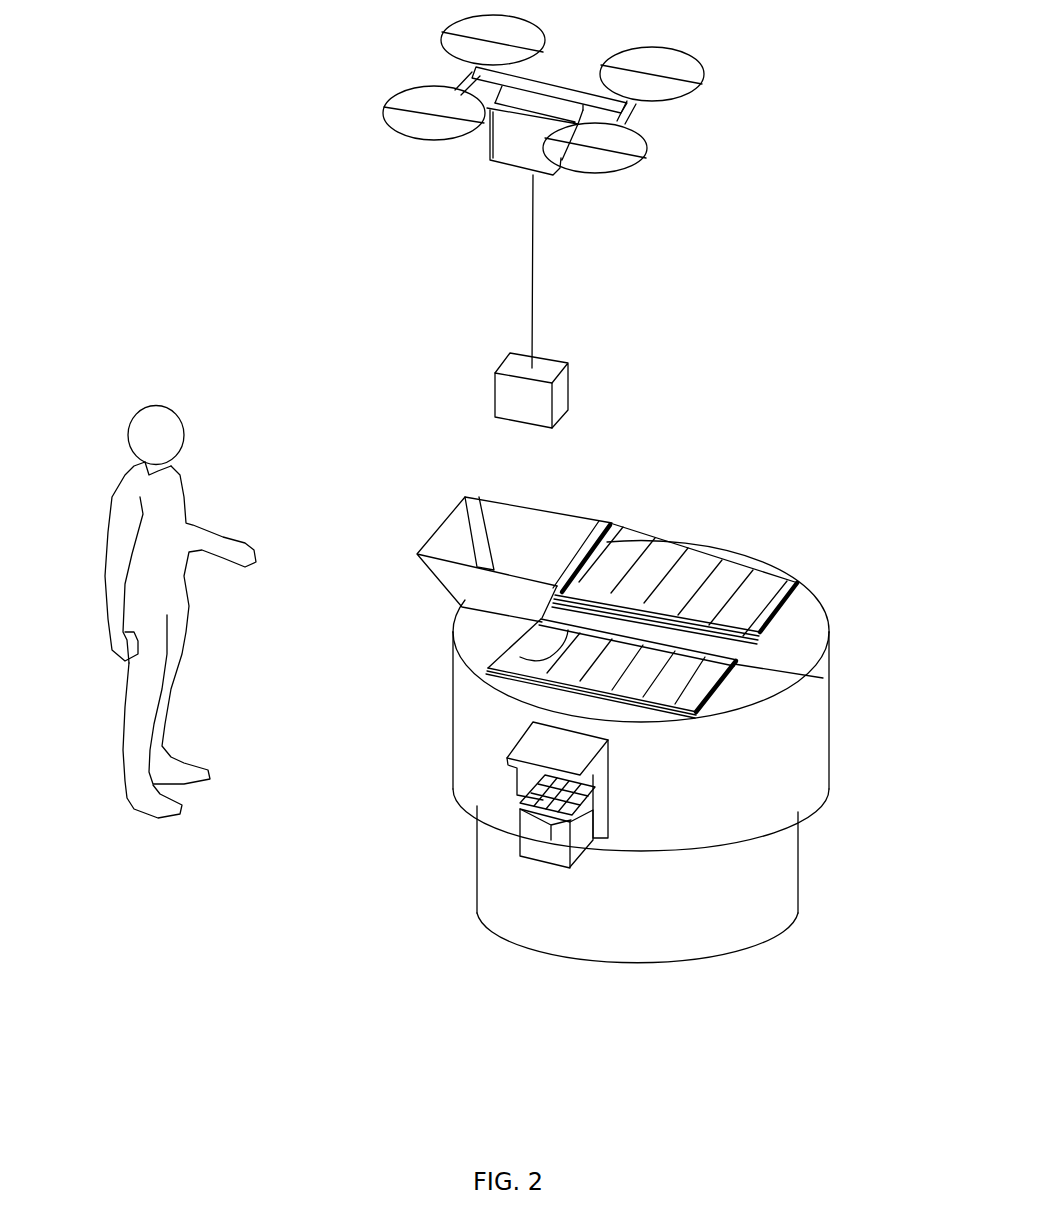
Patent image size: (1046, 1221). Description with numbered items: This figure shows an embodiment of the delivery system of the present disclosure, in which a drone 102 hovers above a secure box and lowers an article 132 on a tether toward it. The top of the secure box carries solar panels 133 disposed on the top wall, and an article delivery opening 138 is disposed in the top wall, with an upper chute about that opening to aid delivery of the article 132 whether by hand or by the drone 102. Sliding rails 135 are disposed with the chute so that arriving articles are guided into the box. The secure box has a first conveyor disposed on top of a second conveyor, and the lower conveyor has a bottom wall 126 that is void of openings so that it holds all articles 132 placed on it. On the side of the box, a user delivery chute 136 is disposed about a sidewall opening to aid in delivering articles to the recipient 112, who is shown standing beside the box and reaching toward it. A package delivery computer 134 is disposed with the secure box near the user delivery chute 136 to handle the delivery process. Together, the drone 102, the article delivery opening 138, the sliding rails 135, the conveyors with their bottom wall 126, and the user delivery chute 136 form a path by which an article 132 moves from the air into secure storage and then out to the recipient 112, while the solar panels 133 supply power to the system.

The drone 102 is at (518, 145).
The recipient 112 is at (153, 486).
The articles 132 is at (568, 365).
The article delivery opening 138 is at (518, 533).
The solar panels 133 is at (620, 558).
The sliding rails 135 is at (520, 657).
The package delivery computer 134 is at (517, 803).
The bottom wall 126 is at (818, 793).
The user delivery chute 136 is at (547, 845).